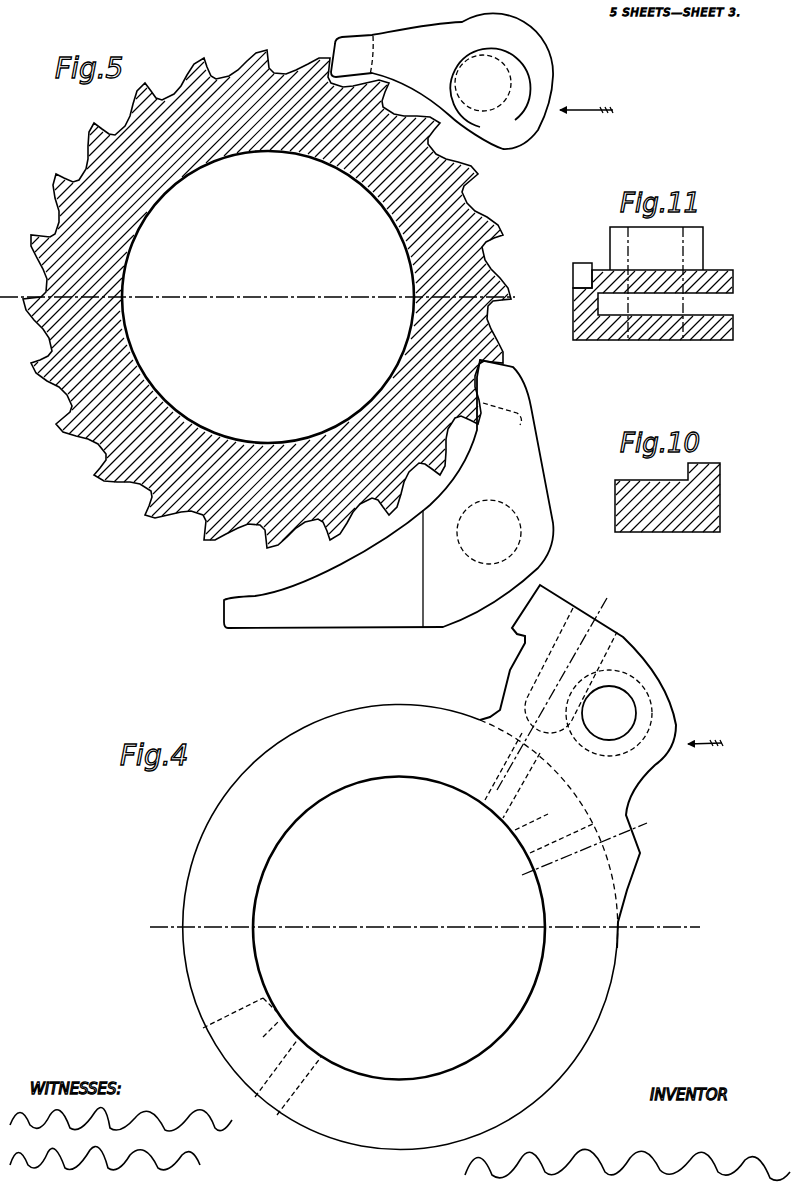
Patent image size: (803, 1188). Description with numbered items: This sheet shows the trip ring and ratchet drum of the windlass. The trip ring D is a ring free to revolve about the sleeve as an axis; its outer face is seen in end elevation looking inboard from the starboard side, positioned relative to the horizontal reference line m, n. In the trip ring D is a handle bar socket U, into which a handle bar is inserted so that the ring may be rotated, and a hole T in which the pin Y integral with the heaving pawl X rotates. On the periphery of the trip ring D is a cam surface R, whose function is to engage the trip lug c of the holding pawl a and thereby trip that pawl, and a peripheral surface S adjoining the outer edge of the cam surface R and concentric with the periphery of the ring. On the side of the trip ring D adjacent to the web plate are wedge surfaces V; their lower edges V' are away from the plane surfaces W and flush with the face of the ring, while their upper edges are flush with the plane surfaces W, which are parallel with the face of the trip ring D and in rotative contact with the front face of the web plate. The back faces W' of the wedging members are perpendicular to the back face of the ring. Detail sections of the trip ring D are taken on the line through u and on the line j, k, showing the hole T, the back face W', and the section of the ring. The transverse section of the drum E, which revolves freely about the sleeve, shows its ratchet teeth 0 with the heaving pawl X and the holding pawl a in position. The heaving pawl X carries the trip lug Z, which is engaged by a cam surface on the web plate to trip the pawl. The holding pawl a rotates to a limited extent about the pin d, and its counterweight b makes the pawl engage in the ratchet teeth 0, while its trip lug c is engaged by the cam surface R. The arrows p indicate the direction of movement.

In FIG. 5, the ratchet teeth 0 is at (213, 56).
In FIG. 5, the drum E is at (385, 197).
In FIG. 5, the heaving pawl X is at (442, 81).
In FIG. 5, the trip lug Z is at (362, 35).
In FIG. 5, the pin Y is at (508, 74).
In FIG. 5, the direction of pressure p is at (599, 108).
In FIG. 4, the direction of pressure p is at (723, 744).
In FIG. 5, the horizontal reference line end m is at (257, 284).
In FIG. 4, the horizontal reference line end m is at (424, 938).
In FIG. 5, the horizontal reference line end n is at (527, 295).
In FIG. 4, the horizontal reference line end n is at (643, 938).
In FIG. 5, the holding pawl a is at (388, 494).
In FIG. 5, the counterweight b is at (383, 569).
In FIG. 5, the trip lug c is at (520, 418).
In FIG. 5, the pin d is at (520, 530).
In FIG. 11, the trip ring D is at (590, 320).
In FIG. 10, the trip ring D is at (662, 517).
In FIG. 4, the trip ring D is at (400, 926).
In FIG. 11, the hole T is at (683, 257).
In FIG. 4, the hole T is at (609, 713).
In FIG. 11, the handle bar socket U is at (654, 305).
In FIG. 4, the handle bar socket U is at (567, 620).
In FIG. 11, the back faces of wedging members W' is at (570, 254).
In FIG. 4, the back faces of wedging members W' is at (391, 927).
In FIG. 4, the plane surfaces W is at (397, 924).
In FIG. 10, the peripheral surface S is at (722, 500).
In FIG. 4, the peripheral surface S is at (642, 855).
In FIG. 4, the cam surface R is at (632, 897).
In FIG. 4, the section line end k is at (618, 613).
In FIG. 4, the section line end j is at (513, 779).
In FIG. 4, the wedge surfaces V is at (399, 925).
In FIG. 4, the lower edges of wedge surfaces V' is at (391, 904).
In FIG. 4, the section line end u is at (523, 878).